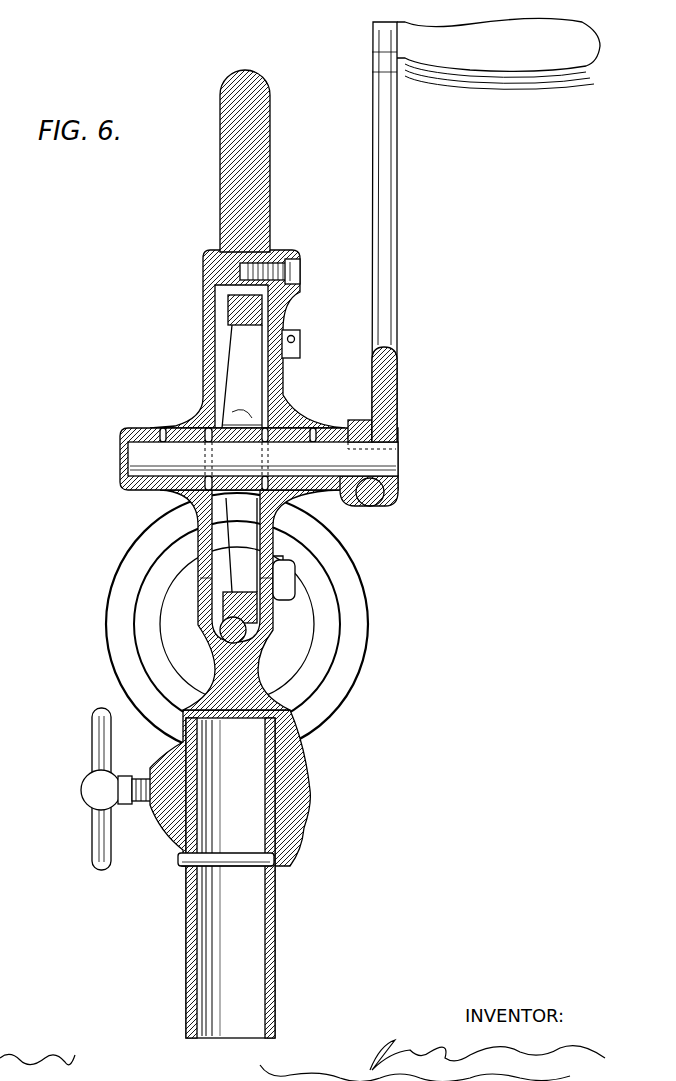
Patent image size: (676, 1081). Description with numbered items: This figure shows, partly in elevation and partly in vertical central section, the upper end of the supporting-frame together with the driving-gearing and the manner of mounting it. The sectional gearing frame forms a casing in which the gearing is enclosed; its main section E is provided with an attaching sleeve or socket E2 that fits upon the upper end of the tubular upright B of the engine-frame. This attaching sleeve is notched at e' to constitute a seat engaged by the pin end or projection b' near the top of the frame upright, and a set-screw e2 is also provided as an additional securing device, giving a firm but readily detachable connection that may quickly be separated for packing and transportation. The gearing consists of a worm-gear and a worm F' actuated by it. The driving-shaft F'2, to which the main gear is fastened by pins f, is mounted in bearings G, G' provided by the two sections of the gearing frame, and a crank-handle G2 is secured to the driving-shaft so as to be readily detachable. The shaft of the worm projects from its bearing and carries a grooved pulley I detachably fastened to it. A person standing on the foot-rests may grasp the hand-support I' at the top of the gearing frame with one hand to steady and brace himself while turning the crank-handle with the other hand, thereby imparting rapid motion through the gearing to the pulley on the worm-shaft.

The hand-support I' is at (256, 161).
The crank-handle G2 is at (486, 230).
The main section of gearing frame E is at (247, 339).
The bearing G' is at (347, 412).
The pins f is at (236, 412).
The driving-shaft F'2 is at (263, 456).
The bearing G is at (258, 475).
The worm F' is at (206, 637).
The grooved pulley I is at (244, 624).
The attaching sleeve or socket E2 is at (300, 774).
The set-screw e2 is at (158, 808).
The notch e' is at (210, 858).
The pin end or projection b' is at (207, 880).
The tubular upright of the engine-frame B is at (275, 955).